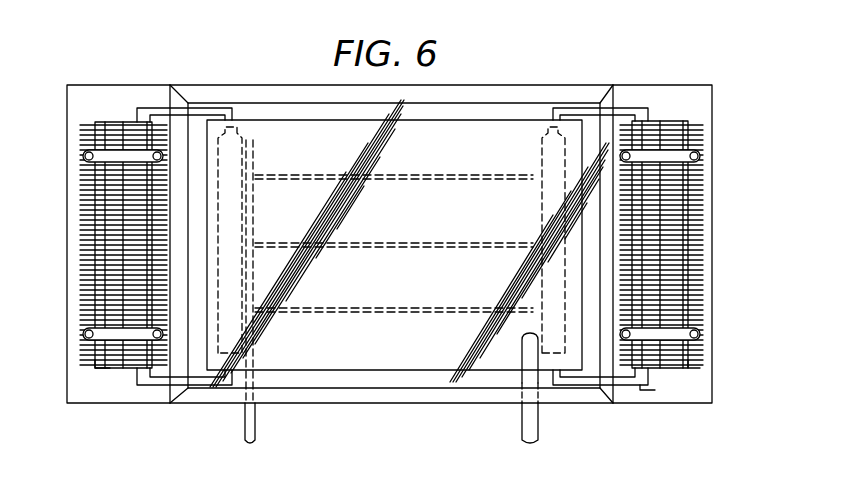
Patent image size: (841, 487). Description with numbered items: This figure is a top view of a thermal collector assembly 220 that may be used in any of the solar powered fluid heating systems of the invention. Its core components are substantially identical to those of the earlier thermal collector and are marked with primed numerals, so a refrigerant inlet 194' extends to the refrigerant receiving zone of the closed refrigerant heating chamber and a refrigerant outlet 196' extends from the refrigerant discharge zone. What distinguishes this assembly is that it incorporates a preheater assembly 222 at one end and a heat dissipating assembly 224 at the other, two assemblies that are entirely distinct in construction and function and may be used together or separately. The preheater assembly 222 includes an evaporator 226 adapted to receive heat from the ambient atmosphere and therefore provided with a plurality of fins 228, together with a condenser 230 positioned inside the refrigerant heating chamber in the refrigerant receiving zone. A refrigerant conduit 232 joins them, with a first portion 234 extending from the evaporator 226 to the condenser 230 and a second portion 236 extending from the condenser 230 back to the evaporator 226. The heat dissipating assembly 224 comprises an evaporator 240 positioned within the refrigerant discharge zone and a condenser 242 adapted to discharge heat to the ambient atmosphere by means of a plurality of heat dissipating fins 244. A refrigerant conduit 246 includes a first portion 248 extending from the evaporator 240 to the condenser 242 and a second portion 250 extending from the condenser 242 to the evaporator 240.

The thermal collector assembly 220 is at (253, 54).
The preheater assembly 222 is at (92, 210).
The heat dissipating assembly 224 is at (695, 210).
The evaporator 226 is at (97, 370).
The fins 228 is at (80, 298).
The condenser 230 is at (228, 190).
The refrigerant conduit 232 is at (153, 392).
The first portion 234 is at (137, 384).
The second portion 236 is at (153, 108).
The evaporator 240 is at (545, 188).
The condenser 242 is at (688, 372).
The heat dissipating fins 244 is at (703, 298).
The refrigerant conduit 246 is at (628, 394).
The first portion 248 is at (652, 386).
The second portion 250 is at (605, 108).
The refrigerant inlet 194' is at (283, 287).
The refrigerant outlet 196' is at (510, 388).